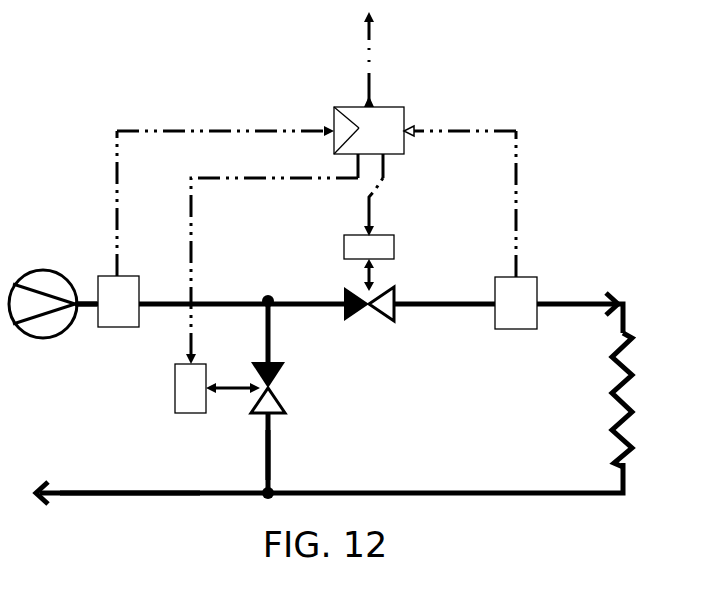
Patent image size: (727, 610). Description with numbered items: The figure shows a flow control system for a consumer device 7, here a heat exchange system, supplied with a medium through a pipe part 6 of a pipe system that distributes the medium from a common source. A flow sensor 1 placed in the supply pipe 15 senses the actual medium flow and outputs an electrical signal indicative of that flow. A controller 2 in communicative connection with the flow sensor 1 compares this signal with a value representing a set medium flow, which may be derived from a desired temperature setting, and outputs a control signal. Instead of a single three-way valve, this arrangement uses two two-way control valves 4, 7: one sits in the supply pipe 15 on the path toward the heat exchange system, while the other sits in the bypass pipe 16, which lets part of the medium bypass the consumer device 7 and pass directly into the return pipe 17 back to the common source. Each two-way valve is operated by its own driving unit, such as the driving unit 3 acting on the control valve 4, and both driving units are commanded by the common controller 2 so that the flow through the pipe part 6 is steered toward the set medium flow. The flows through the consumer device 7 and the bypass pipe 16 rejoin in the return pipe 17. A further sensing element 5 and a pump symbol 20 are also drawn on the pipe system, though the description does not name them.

The flow sensor 1 is at (216, 226).
The controller 2 is at (369, 95).
The driving unit 3 is at (385, 218).
The two-way control valve 4 is at (385, 302).
The sensor unit 5 is at (470, 227).
The pipe part 6 is at (266, 295).
The consumer device 7 is at (665, 398).
The supply pipe 15 is at (88, 300).
The bypass pipe 16 is at (265, 453).
The return pipe 17 is at (126, 497).
The pump 20 is at (43, 304).